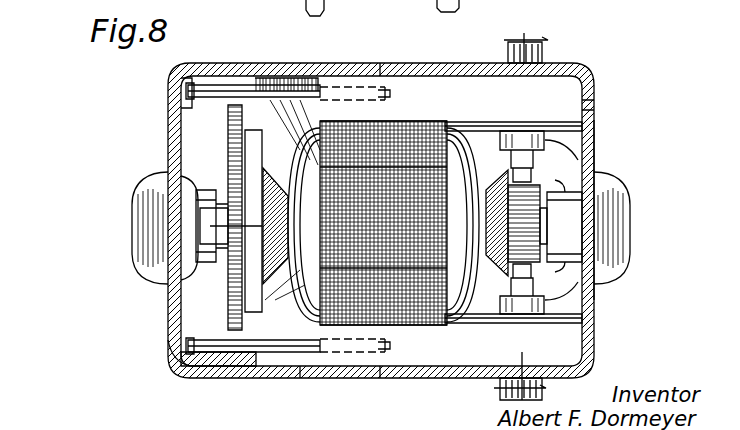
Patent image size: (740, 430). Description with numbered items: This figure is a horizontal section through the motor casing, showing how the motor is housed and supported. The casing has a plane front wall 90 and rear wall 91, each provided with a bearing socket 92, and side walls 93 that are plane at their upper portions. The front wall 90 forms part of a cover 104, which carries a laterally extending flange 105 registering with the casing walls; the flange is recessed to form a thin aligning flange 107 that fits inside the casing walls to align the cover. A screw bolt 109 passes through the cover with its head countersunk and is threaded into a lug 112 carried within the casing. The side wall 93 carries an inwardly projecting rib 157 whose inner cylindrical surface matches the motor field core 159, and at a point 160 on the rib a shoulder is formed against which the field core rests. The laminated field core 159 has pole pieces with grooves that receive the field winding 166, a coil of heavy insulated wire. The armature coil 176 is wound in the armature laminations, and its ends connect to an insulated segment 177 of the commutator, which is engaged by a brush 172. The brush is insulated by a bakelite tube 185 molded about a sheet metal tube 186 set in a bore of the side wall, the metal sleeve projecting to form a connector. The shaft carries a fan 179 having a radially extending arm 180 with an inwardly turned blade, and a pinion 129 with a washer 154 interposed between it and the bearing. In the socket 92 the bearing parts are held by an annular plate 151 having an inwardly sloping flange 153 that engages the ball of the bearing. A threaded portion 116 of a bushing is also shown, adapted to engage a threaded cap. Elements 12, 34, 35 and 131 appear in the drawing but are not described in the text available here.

The screw 12 is at (500, 210).
The mounting stud 34 is at (326, 14).
The nut 35 is at (462, 4).
The front wall 90 is at (168, 306).
The rear wall 91 is at (588, 128).
The bearing socket 92 is at (140, 248).
The side wall 93 is at (407, 68).
The cover 104 is at (250, 140).
The laterally extending flange 105 is at (228, 72).
The aligning flange 107 is at (220, 376).
The screw bolt 109 is at (264, 84).
The lug 112 is at (356, 82).
The threaded portion 116 is at (318, 352).
The pinion 129 is at (186, 232).
The gear 131 is at (228, 116).
The annular plate 151 is at (196, 186).
The inwardly sloping flange 153 is at (548, 200).
The washer 154 is at (200, 210).
The rib 157 is at (552, 112).
The motor field core 159 is at (392, 86).
The shoulder point 160 is at (452, 135).
The field winding 166 is at (522, 140).
The brush 172 is at (562, 168).
The armature coil 176 is at (252, 352).
The insulated segment 177 is at (588, 248).
The fan 179 is at (183, 270).
The radially extending arm 180 is at (236, 164).
The bakelite tube 185 is at (546, 56).
The sheet metal tube 186 is at (578, 150).